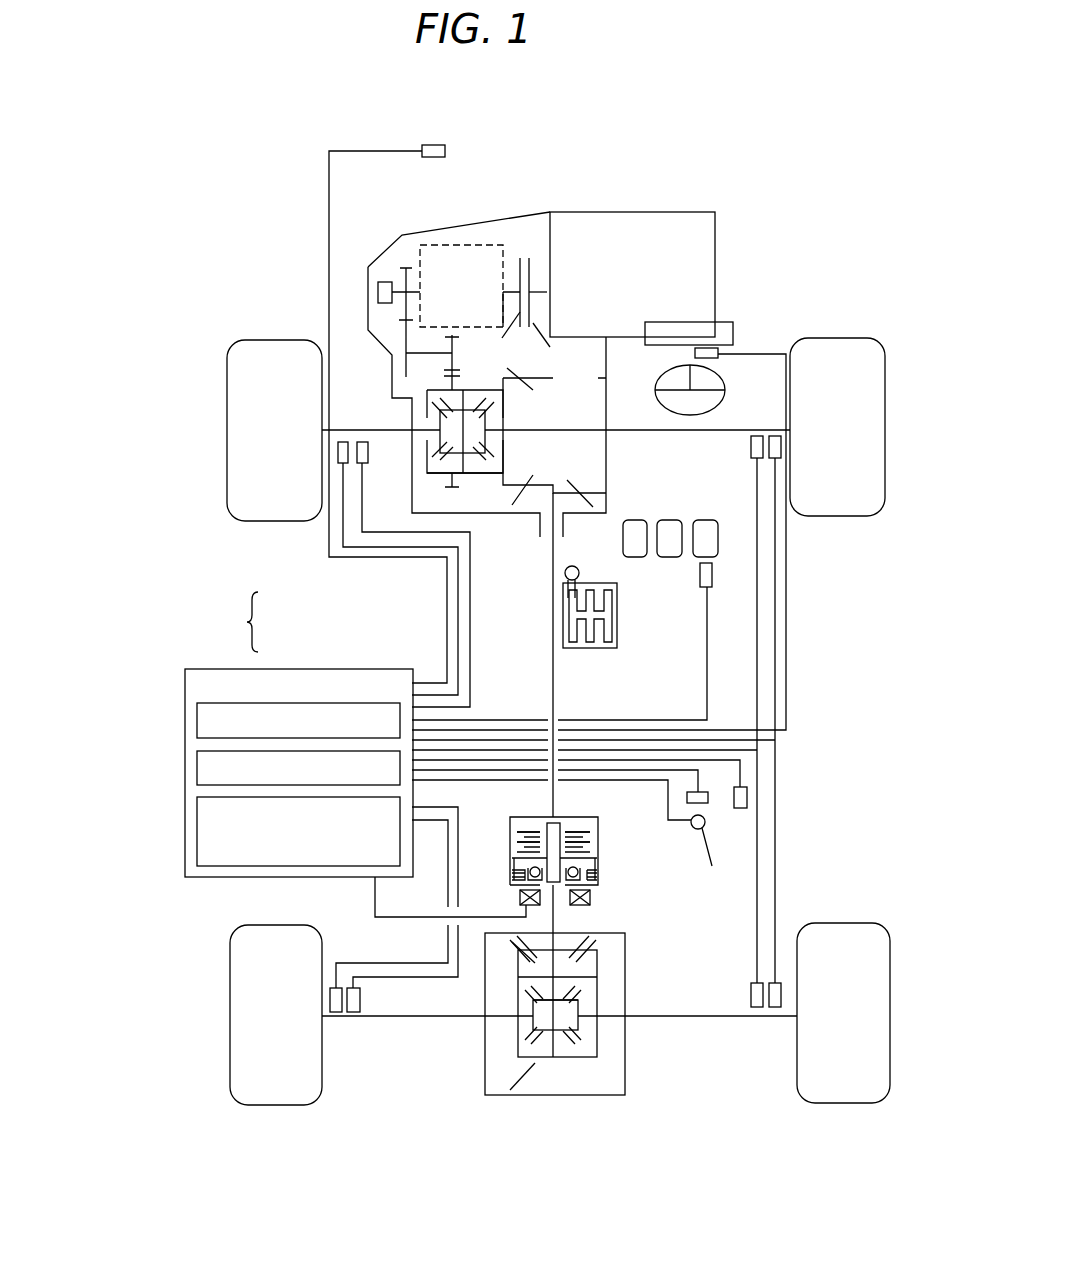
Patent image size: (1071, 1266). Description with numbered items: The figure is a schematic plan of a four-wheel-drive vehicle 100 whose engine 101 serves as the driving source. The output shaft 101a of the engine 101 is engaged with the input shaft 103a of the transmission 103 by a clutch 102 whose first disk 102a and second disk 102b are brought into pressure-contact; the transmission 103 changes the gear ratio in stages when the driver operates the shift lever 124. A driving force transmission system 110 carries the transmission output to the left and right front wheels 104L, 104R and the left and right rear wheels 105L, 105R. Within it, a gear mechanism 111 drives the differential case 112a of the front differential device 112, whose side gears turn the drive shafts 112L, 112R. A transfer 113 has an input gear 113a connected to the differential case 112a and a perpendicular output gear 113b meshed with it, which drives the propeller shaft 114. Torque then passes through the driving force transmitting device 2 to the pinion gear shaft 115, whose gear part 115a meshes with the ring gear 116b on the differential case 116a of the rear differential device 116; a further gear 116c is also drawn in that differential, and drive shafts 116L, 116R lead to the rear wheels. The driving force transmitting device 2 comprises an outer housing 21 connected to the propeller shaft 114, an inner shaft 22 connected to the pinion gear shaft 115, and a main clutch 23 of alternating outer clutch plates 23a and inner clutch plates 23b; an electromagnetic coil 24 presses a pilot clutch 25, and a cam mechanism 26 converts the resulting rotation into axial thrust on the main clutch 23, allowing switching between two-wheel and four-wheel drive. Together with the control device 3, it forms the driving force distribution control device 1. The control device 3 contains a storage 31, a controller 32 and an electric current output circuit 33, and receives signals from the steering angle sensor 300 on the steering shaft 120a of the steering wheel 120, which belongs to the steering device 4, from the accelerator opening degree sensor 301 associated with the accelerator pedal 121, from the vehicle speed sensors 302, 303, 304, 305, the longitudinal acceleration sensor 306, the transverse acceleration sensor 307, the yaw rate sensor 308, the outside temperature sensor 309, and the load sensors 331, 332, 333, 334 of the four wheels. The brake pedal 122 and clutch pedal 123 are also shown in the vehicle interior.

The four-wheel-drive vehicle 100 is at (714, 90).
The driving force distribution control device 1 is at (153, 624).
The driving force transmitting device 2 is at (533, 818).
The control device 3 is at (317, 669).
The steering device 4 is at (698, 322).
The outer housing 21 is at (530, 817).
The inner shaft 22 is at (547, 852).
The main clutch 23 is at (604, 836).
The outer clutch plates 23a is at (523, 848).
The inner clutch plates 23b is at (525, 830).
The electromagnetic coil 24 is at (520, 895).
The pilot clutch 25 is at (604, 877).
The cam mechanism 26 is at (604, 858).
The storage 31 is at (195, 727).
The controller 32 is at (195, 772).
The electric current output circuit 33 is at (195, 823).
The engine 101 is at (672, 212).
The output shaft 101a is at (547, 292).
The clutch 102 is at (525, 248).
The first disk 102a is at (565, 345).
The second disk 102b is at (505, 339).
The transmission 103 is at (453, 245).
The input shaft 103a is at (514, 290).
The left front wheel 104L is at (283, 340).
The right front wheel 104R is at (835, 338).
The left rear wheel 105L is at (300, 1106).
The right rear wheel 105R is at (823, 1105).
The driving force transmission system 110 is at (371, 244).
The gear mechanism 111 is at (381, 314).
The front differential device 112 is at (479, 480).
The differential case 112a is at (437, 473).
The drive shaft 112L is at (383, 430).
The drive shaft 112R is at (730, 427).
The transfer 113 is at (574, 409).
The input gear 113a is at (535, 384).
The output gear 113b is at (573, 480).
The propeller shaft 114 is at (552, 635).
The pinion gear shaft 115 is at (558, 920).
The gear part 115a is at (593, 948).
The rear differential device 116 is at (614, 1051).
The differential case 116a is at (568, 1060).
The ring gear 116b is at (510, 949).
The rear differential gear 116c is at (540, 1097).
The drive shaft 116L is at (370, 1020).
The drive shaft 116R is at (687, 1017).
The steering wheel 120 is at (662, 405).
The steering shaft 120a is at (688, 348).
The accelerator pedal 121 is at (707, 520).
The brake pedal 122 is at (672, 520).
The clutch pedal 123 is at (633, 520).
The shift lever 124 is at (577, 565).
The steering angle sensor 300 is at (722, 353).
The accelerator opening degree sensor 301 is at (712, 577).
The vehicle speed sensor 302 is at (368, 460).
The vehicle speed sensor 303 is at (749, 447).
The vehicle speed sensor 304 is at (363, 997).
The vehicle speed sensor 305 is at (750, 995).
The longitudinal acceleration sensor 306 is at (747, 798).
The transverse acceleration sensor 307 is at (710, 800).
The yaw rate sensor 308 is at (572, 833).
The outside temperature sensor 309 is at (428, 145).
The load sensor 331 is at (338, 460).
The load sensor 332 is at (781, 458).
The load sensor 333 is at (337, 1015).
The load sensor 334 is at (777, 1007).